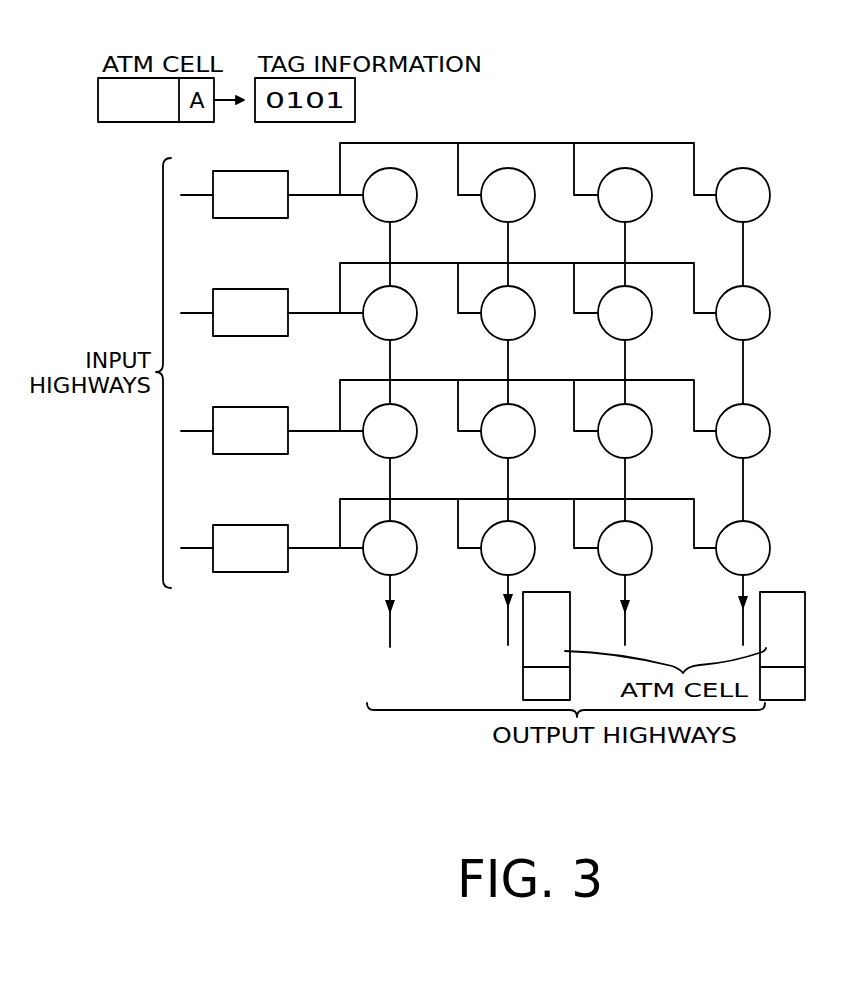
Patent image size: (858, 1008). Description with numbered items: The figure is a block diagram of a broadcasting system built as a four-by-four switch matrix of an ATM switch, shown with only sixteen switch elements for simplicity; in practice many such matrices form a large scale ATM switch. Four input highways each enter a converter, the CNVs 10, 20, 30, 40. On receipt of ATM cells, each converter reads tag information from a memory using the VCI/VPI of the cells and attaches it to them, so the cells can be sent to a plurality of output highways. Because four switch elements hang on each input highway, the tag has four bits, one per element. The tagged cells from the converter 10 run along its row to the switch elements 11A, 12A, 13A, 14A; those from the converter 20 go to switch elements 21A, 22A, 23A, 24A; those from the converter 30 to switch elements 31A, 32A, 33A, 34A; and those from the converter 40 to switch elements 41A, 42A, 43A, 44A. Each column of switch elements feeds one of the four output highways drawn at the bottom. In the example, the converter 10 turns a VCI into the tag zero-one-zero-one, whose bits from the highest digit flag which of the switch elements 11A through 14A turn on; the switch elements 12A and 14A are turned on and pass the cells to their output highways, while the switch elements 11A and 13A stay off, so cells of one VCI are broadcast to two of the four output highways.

The converter (CNV) 10 is at (284, 213).
The converter (CNV) 20 is at (284, 332).
The converter (CNV) 30 is at (284, 452).
The converter (CNV) 40 is at (278, 568).
The switch element (SW) 11A is at (407, 211).
The switch element (SW) 12A is at (525, 211).
The switch element (SW) 13A is at (642, 211).
The switch element (SW) 14A is at (760, 211).
The switch element (SW) 21A is at (404, 331).
The switch element (SW) 22A is at (521, 331).
The switch element (SW) 23A is at (638, 331).
The switch element (SW) 24A is at (756, 331).
The switch element (SW) 31A is at (404, 449).
The switch element (SW) 32A is at (521, 449).
The switch element (SW) 33A is at (638, 449).
The switch element (SW) 34A is at (756, 449).
The switch element (SW) 41A is at (397, 572).
The switch element (SW) 42A is at (521, 565).
The switch element (SW) 43A is at (632, 572).
The switch element (SW) 44A is at (758, 565).